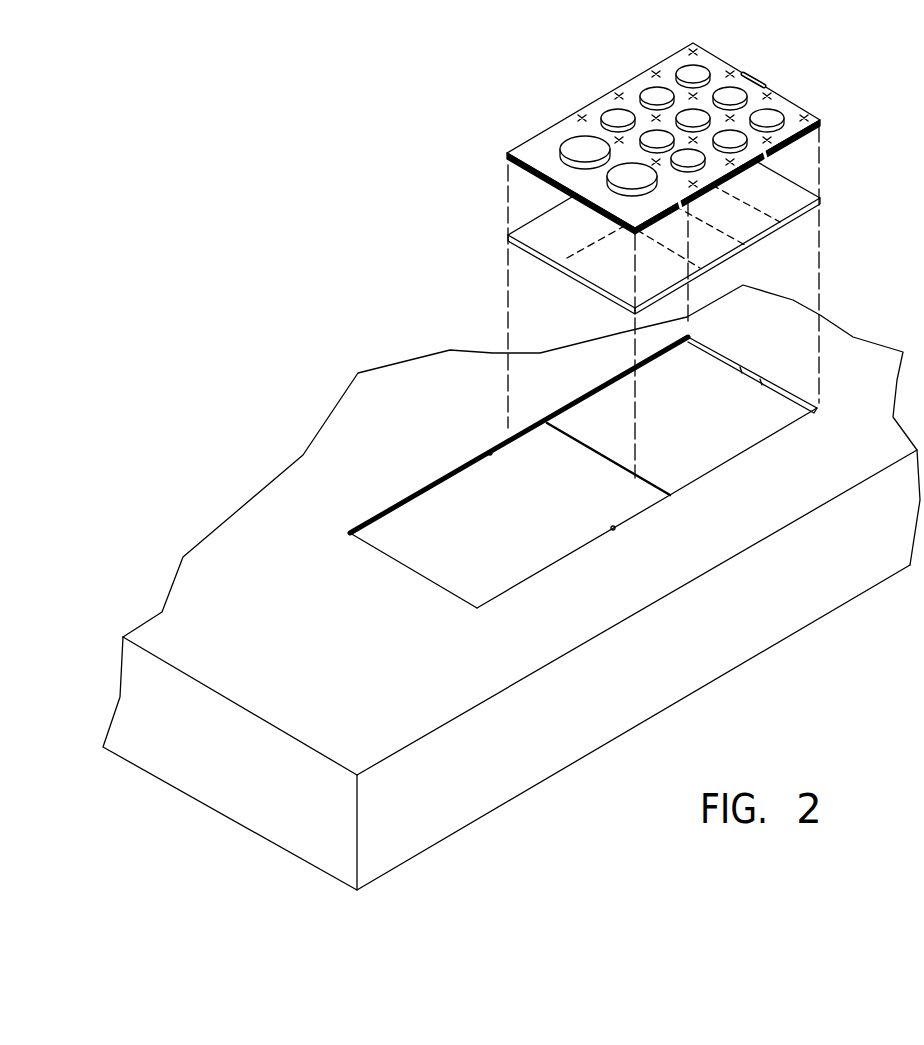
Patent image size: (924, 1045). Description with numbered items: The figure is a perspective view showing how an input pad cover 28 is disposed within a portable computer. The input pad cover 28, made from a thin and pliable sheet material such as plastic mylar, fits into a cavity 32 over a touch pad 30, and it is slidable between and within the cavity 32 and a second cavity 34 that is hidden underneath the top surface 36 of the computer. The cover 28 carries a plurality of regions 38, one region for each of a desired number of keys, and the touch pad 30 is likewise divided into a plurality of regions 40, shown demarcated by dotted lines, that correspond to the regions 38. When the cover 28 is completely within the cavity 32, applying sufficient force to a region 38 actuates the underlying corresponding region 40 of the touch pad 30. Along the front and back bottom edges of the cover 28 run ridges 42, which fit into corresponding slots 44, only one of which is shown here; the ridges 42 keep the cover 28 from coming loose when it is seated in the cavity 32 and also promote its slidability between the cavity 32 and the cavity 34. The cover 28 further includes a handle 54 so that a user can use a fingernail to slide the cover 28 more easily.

The input pad cover 28 is at (670, 68).
The touch pad 30 is at (755, 422).
The cavity 32 is at (703, 472).
The cavity 34 is at (527, 577).
The top surface 36 is at (310, 700).
The regions 38 is at (577, 145).
The regions 40 is at (617, 274).
The ridges 42 is at (793, 139).
The slot 44 is at (690, 336).
The handle 54 is at (753, 73).